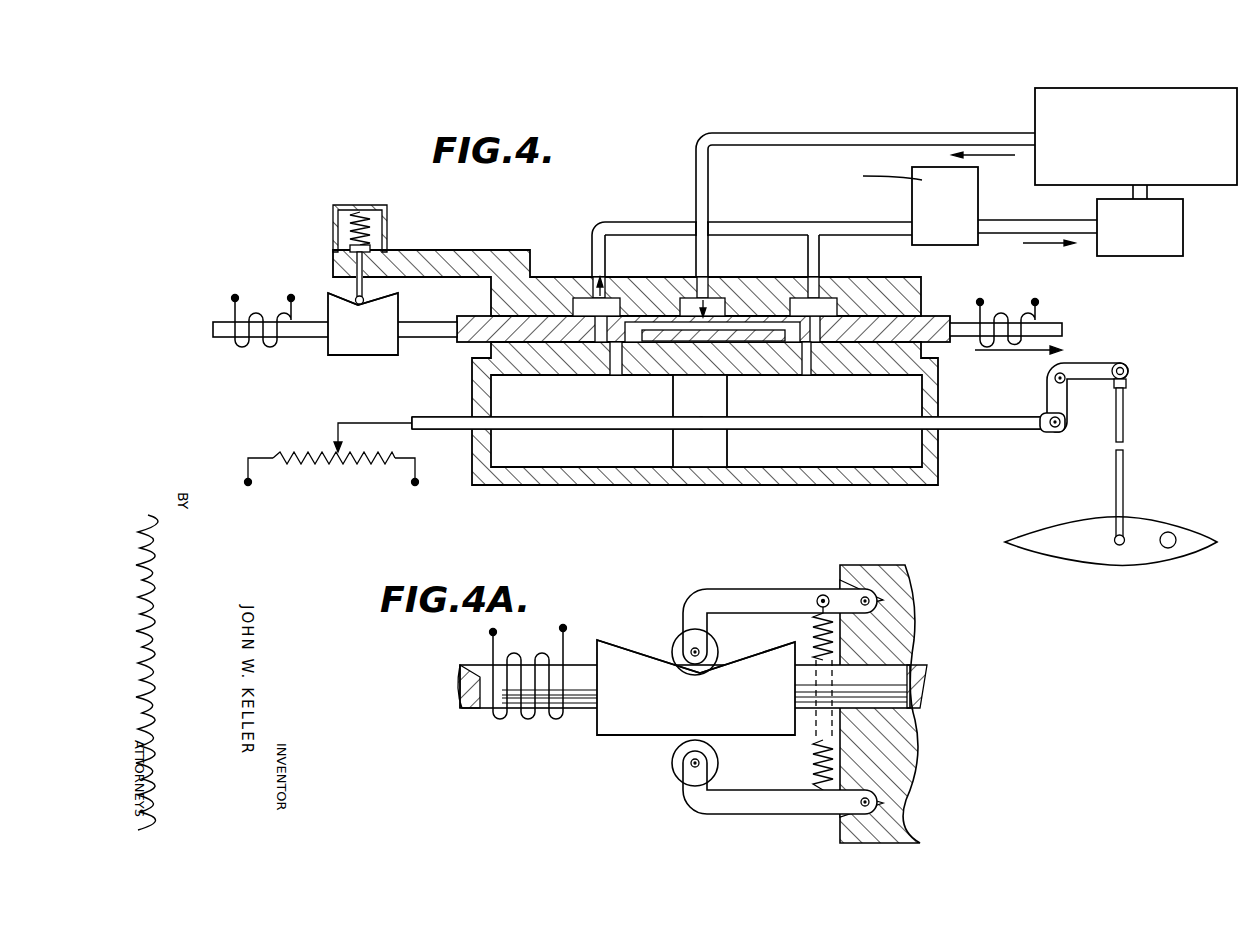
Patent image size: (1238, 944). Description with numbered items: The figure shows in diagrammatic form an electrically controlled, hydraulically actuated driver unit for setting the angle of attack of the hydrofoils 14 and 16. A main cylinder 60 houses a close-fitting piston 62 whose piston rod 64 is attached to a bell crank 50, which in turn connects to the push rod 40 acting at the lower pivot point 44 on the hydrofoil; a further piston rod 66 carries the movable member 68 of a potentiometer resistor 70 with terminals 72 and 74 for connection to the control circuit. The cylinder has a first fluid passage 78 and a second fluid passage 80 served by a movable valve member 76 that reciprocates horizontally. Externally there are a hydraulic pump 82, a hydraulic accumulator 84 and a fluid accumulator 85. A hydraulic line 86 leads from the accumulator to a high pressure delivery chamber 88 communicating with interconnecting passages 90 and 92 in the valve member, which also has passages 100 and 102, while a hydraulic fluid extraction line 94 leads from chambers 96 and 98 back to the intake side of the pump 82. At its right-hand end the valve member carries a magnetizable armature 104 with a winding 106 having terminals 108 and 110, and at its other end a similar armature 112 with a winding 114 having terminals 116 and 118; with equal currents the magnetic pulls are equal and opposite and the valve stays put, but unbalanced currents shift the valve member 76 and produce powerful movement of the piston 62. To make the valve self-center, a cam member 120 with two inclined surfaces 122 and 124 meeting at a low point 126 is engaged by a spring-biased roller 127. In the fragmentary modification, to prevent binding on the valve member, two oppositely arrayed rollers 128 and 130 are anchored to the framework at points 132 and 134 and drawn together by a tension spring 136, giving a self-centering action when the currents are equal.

In FIG. 4, the hydrofoil 14 is at (1111, 528).
In FIG. 4, the hydrofoil 16 is at (1150, 521).
In FIG. 4, the push rod 40 is at (1123, 417).
In FIG. 4, the lower pivot point 44 is at (1120, 547).
In FIG. 4, the bell crank 50 is at (1090, 363).
In FIG. 4, the main cylinder 60 is at (788, 484).
In FIG. 4, the piston 62 is at (693, 450).
In FIG. 4, the piston rod 64 is at (967, 415).
In FIG. 4, the further piston rod 66 is at (440, 417).
In FIG. 4, the movable member 68 is at (336, 432).
In FIG. 4, the potentiometer resistor 70 is at (331, 462).
In FIG. 4, the terminal 72 is at (247, 483).
In FIG. 4, the terminal 74 is at (413, 485).
In FIG. 4, the movable valve member 76 is at (468, 318).
In FIG. 4, the first fluid passage 78 is at (614, 376).
In FIG. 4, the second fluid passage 80 is at (803, 376).
In FIG. 4, the hydraulic pump 82 is at (1133, 257).
In FIG. 4, the hydraulic accumulator 84 is at (1178, 79).
In FIG. 4, the fluid accumulator 85 is at (978, 197).
In FIG. 4, the hydraulic line 86 is at (803, 133).
In FIG. 4, the high pressure delivery chamber 88 is at (716, 300).
In FIG. 4, the interconnecting passage 90 is at (667, 328).
In FIG. 4, the interconnecting passage 92 is at (762, 328).
In FIG. 4, the hydraulic fluid extraction line 94 is at (827, 220).
In FIG. 4, the chamber 96 is at (598, 300).
In FIG. 4, the chamber 98 is at (828, 298).
In FIG. 4, the passage 100 is at (585, 300).
In FIG. 4, the passage 102 is at (822, 330).
In FIG. 4, the magnetizable armature 104 is at (1062, 329).
In FIG. 4, the winding 106 is at (978, 349).
In FIG. 4, the terminal 108 is at (981, 301).
In FIG. 4, the terminal 110 is at (1036, 301).
In FIG. 4, the magnetizable armature 112 is at (213, 329).
In FIG. 4, the winding 114 is at (270, 341).
In FIG. 4, the terminal 116 is at (235, 297).
In FIG. 4, the terminal 118 is at (291, 297).
In FIG. 4, the cam member 120 is at (369, 356).
In FIG. 4A, the cam member 120 is at (630, 713).
In FIG. 4, the inclined surface 122 is at (337, 296).
In FIG. 4A, the inclined surface 122 is at (618, 648).
In FIG. 4, the inclined surface 124 is at (396, 294).
In FIG. 4A, the inclined surface 124 is at (744, 660).
In FIG. 4, the low point 126 is at (357, 305).
In FIG. 4A, the low point 126 is at (692, 676).
In FIG. 4, the roller 127 is at (340, 278).
In FIG. 4A, the roller 128 is at (682, 637).
In FIG. 4A, the roller 130 is at (674, 752).
In FIG. 4A, the anchor point 132 is at (838, 575).
In FIG. 4A, the anchor point 134 is at (855, 818).
In FIG. 4A, the tension spring 136 is at (813, 758).